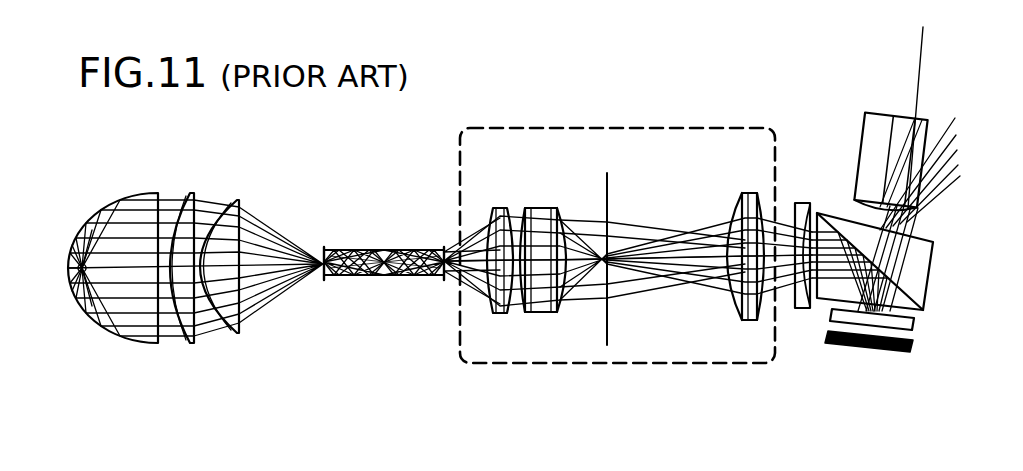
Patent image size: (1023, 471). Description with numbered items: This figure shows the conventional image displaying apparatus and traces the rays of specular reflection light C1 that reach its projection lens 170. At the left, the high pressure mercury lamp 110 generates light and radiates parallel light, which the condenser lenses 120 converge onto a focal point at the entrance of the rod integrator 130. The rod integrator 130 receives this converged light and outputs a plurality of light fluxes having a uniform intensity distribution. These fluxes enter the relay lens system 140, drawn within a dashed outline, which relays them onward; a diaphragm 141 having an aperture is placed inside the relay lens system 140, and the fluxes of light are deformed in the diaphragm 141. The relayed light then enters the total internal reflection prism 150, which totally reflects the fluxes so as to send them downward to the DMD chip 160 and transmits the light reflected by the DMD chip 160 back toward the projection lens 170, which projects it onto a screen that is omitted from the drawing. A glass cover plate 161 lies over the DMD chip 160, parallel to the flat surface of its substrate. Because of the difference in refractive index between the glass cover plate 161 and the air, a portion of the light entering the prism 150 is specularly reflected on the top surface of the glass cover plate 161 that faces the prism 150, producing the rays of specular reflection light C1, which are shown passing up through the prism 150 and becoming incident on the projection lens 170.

The high pressure mercury lamp 110 is at (78, 237).
The condenser lenses 120 is at (245, 182).
The rod integrator 130 is at (388, 252).
The relay lens system 140 is at (590, 127).
The diaphragm 141 is at (607, 328).
The total internal reflection prism 150 is at (933, 268).
The DMD chip 160 is at (871, 354).
The glass cover plate 161 is at (914, 325).
The projection lens 170 is at (875, 109).
The rays of specular reflection light C1 is at (883, 228).